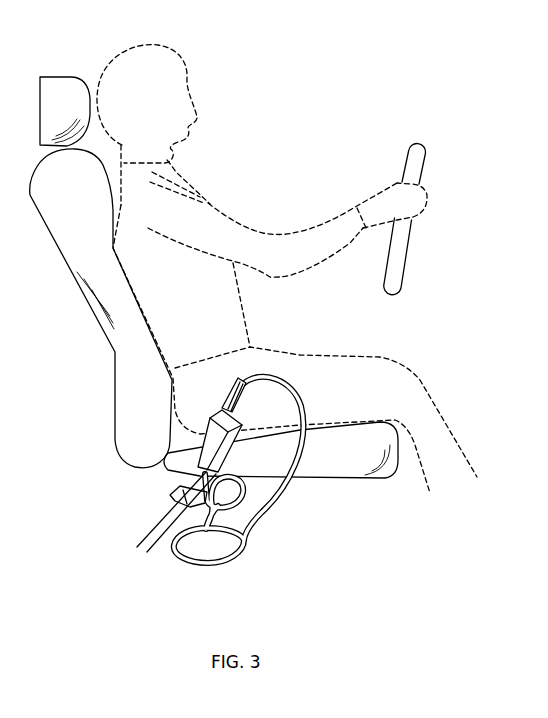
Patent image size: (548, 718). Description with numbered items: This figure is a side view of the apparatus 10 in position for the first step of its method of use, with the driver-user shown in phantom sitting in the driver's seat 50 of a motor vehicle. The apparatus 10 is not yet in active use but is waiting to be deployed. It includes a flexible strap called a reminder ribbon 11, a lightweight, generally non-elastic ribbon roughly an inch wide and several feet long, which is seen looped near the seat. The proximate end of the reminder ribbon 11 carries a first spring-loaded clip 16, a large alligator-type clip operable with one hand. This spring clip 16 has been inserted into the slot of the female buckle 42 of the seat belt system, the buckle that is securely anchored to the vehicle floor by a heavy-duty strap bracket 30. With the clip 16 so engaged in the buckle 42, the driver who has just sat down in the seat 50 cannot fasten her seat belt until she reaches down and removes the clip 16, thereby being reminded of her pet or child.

The apparatus 10 is at (287, 542).
The reminder ribbon 11 is at (280, 493).
The first spring-loaded clip 16 is at (240, 381).
The strap bracket 30 is at (160, 523).
The female buckle 42 is at (202, 440).
The driver's seat 50 is at (62, 222).